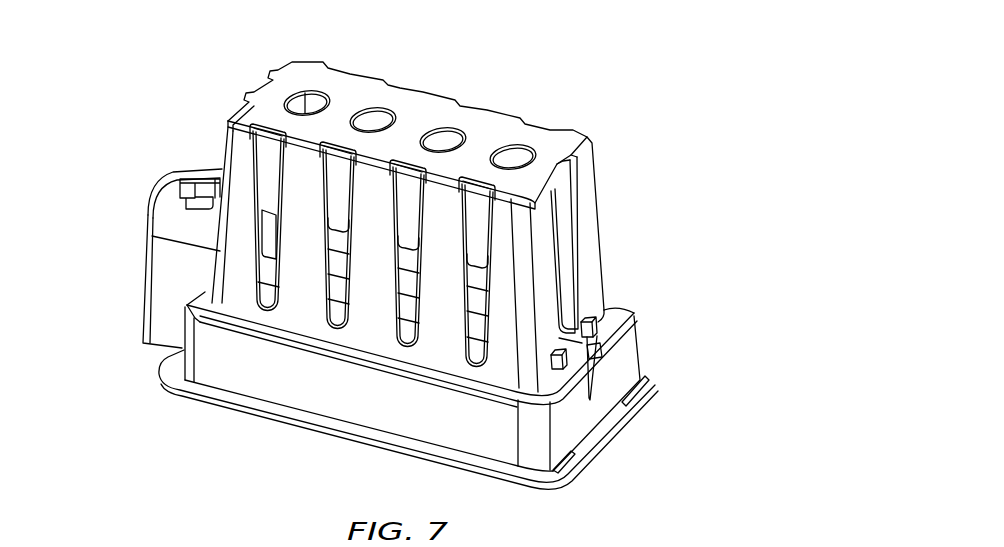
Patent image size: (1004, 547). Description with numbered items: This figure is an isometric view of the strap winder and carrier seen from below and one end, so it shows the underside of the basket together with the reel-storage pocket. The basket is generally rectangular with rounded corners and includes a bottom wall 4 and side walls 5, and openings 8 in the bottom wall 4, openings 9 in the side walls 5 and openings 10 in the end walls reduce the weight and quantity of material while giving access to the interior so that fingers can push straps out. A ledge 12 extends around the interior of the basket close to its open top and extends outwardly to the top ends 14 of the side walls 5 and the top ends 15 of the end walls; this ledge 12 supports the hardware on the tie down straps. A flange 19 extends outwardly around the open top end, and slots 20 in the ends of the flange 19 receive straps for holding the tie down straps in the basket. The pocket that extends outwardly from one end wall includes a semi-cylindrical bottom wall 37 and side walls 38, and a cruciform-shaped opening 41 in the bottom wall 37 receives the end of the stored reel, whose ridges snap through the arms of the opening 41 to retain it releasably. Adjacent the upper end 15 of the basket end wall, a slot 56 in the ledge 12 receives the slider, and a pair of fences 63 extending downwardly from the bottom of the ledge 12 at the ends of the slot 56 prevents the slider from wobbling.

The bottom wall 4 is at (409, 156).
The side walls 5 is at (380, 328).
The openings 8 is at (370, 105).
The openings 9 is at (337, 213).
The openings 10 is at (573, 193).
The ledge 12 is at (337, 348).
The top ends 14 is at (240, 385).
The top ends 15 is at (570, 423).
The flange 19 is at (312, 425).
The slots 20 is at (653, 372).
The semi-cylindrical bottom wall 37 is at (167, 212).
The side walls 38 is at (153, 290).
The cruciform-shaped opening 41 is at (178, 189).
The slot 56 is at (628, 308).
The fences 63 is at (588, 318).